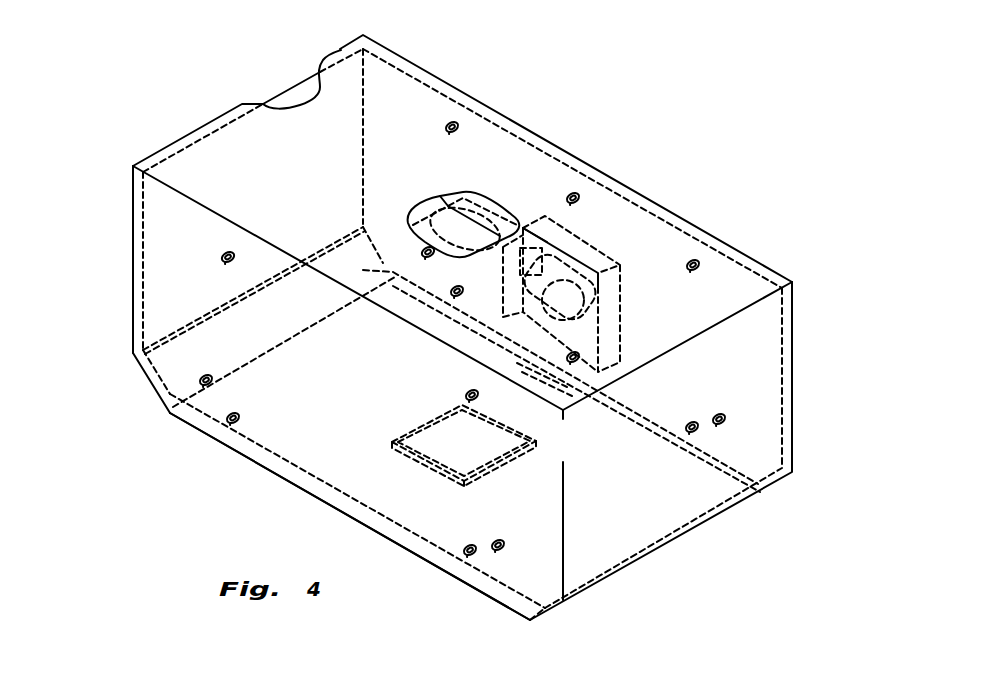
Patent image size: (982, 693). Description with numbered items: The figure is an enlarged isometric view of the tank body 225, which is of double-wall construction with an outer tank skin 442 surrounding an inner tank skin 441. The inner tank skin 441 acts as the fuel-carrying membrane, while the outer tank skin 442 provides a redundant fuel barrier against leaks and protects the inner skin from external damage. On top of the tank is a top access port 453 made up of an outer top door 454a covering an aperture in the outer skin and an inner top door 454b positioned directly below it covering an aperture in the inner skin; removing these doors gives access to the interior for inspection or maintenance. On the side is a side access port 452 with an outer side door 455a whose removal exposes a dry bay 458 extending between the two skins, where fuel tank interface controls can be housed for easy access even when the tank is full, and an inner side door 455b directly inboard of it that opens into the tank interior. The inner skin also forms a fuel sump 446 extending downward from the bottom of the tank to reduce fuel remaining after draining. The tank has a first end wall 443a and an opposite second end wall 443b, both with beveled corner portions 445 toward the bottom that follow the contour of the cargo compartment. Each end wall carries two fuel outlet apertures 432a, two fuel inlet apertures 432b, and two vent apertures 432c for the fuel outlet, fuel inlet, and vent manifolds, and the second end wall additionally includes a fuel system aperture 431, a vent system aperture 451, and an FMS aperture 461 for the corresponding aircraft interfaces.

The tank body 225 is at (133, 217).
The fuel system aperture 431 is at (600, 367).
The fuel outlet apertures 432a is at (445, 240).
The fuel inlet apertures 432b is at (466, 275).
The vent apertures 432c is at (460, 114).
The inner tank skin 441 is at (291, 90).
The outer tank skin 442 is at (206, 124).
The first end wall 443a is at (262, 525).
The second end wall 443b is at (653, 181).
The beveled corner portions 445 is at (150, 379).
The fuel sump 446 is at (497, 477).
The vent system aperture 451 is at (598, 243).
The side access port 452 is at (600, 232).
The top access port 453 is at (458, 172).
The outer top door 454a is at (447, 203).
The inner top door 454b is at (437, 222).
The outer side door 455a is at (590, 280).
The inner side door 455b is at (586, 312).
The dry bay 458 is at (587, 350).
The FMS aperture 461 is at (538, 250).